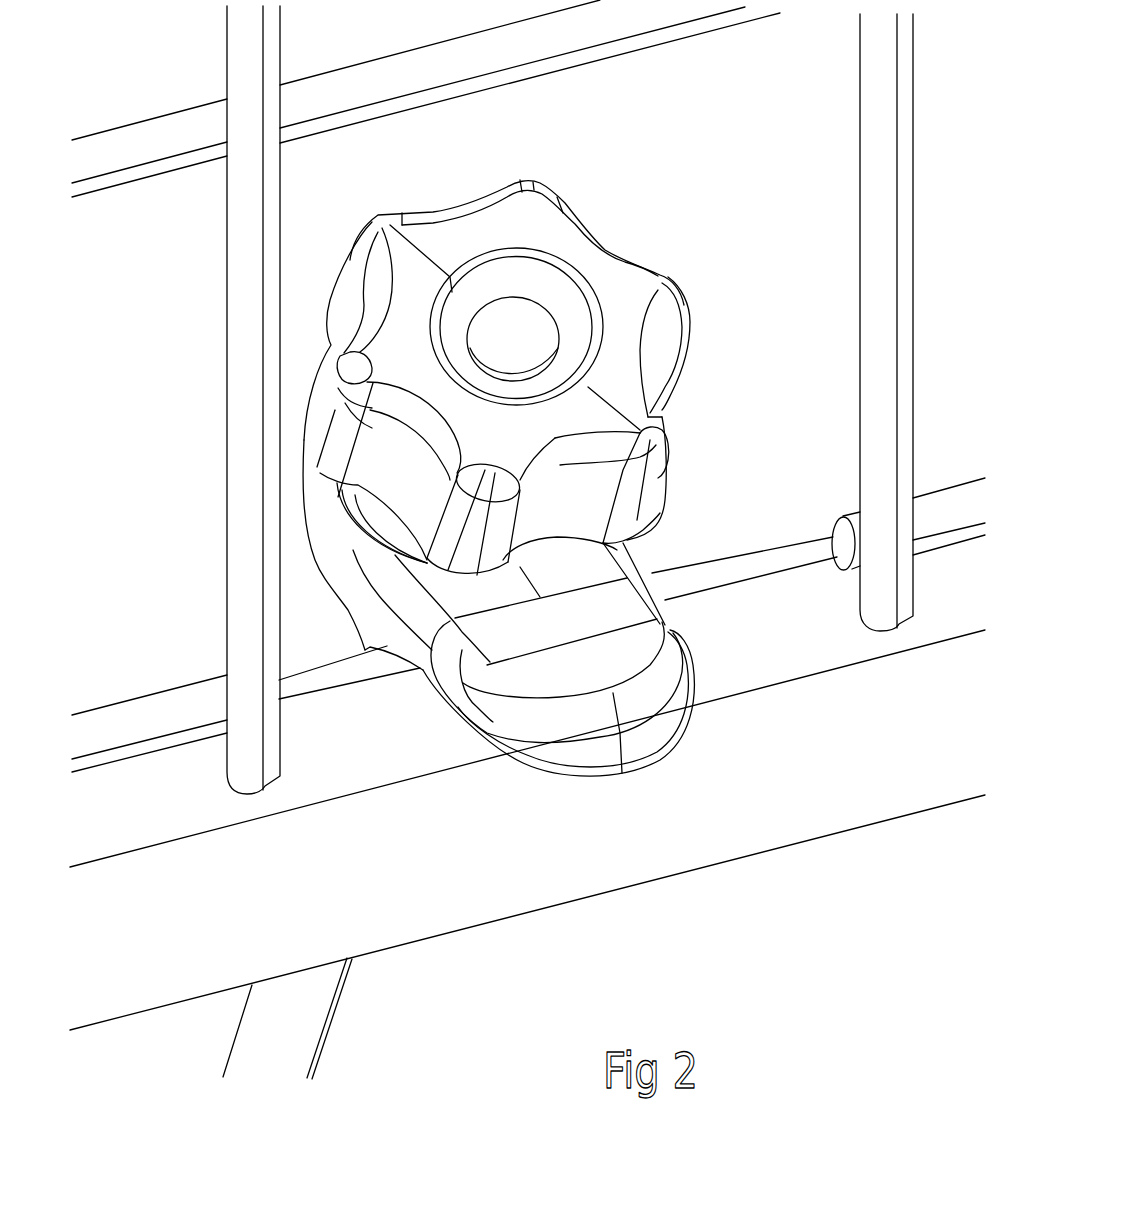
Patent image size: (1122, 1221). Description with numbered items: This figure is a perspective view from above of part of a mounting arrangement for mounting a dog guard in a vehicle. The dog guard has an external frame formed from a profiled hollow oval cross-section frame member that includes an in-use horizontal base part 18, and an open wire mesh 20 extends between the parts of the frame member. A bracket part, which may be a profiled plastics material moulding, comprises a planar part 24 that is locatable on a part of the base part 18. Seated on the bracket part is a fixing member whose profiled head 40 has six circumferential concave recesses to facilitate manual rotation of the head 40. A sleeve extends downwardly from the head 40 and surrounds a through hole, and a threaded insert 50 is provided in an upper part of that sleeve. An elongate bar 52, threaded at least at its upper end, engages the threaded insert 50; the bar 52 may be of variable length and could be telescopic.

The base part 18 is at (795, 808).
The open wire mesh 20 is at (188, 150).
The planar part 24 is at (582, 669).
The profiled head 40 is at (627, 313).
The threaded insert 50 is at (550, 310).
The bar 52 is at (302, 1018).